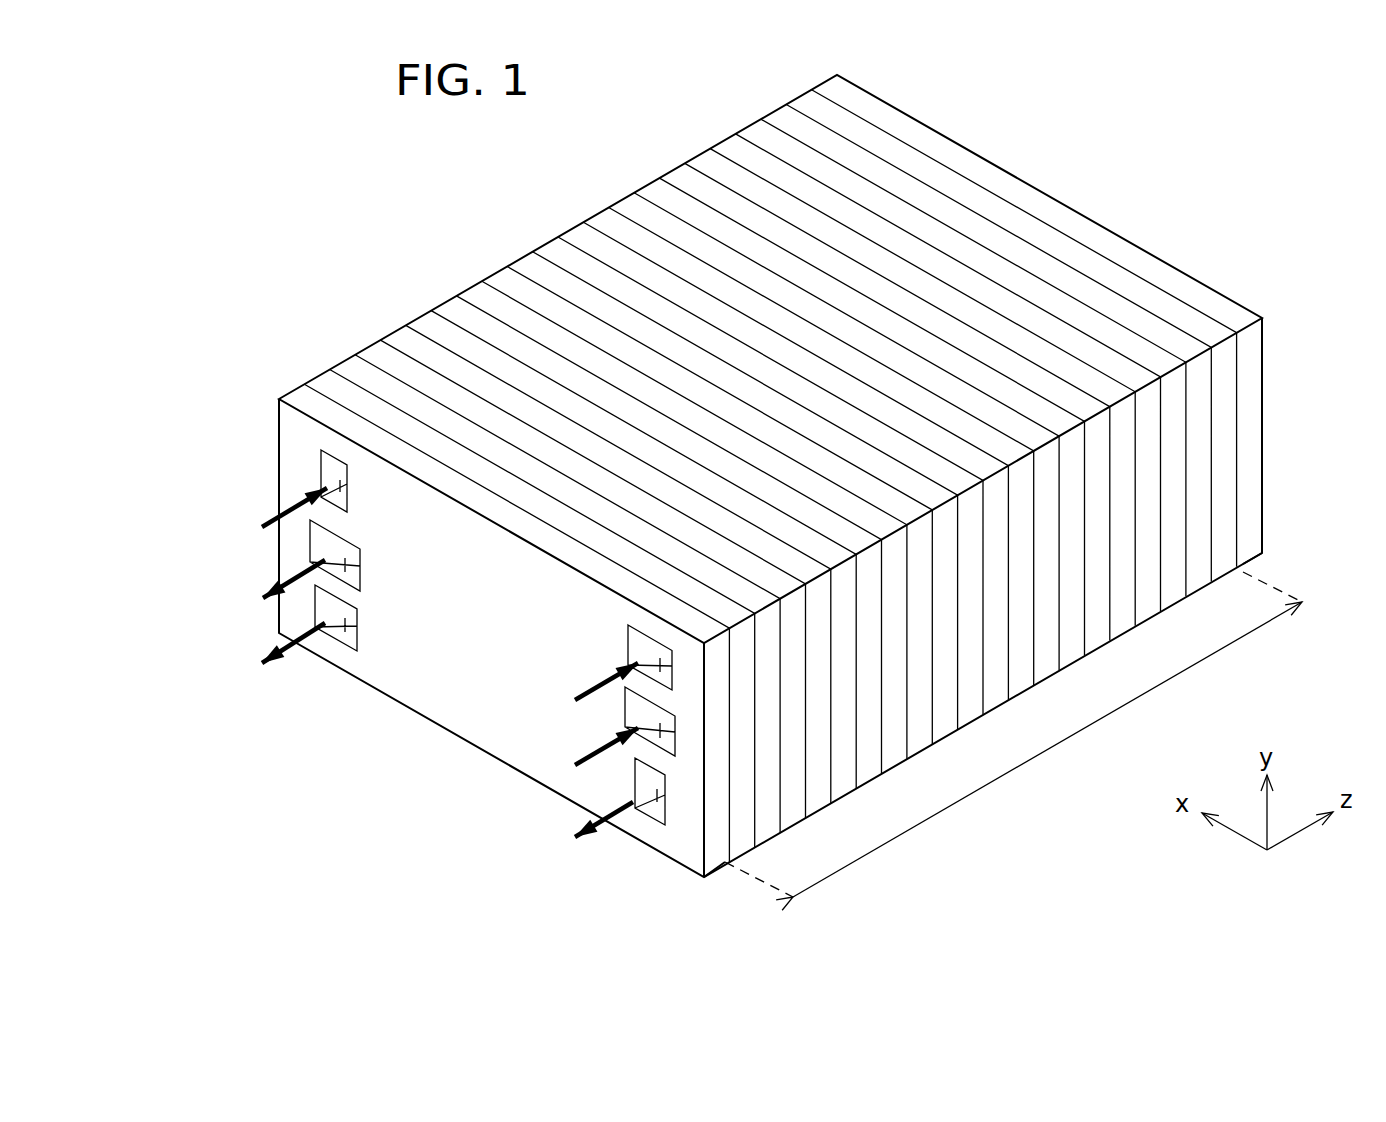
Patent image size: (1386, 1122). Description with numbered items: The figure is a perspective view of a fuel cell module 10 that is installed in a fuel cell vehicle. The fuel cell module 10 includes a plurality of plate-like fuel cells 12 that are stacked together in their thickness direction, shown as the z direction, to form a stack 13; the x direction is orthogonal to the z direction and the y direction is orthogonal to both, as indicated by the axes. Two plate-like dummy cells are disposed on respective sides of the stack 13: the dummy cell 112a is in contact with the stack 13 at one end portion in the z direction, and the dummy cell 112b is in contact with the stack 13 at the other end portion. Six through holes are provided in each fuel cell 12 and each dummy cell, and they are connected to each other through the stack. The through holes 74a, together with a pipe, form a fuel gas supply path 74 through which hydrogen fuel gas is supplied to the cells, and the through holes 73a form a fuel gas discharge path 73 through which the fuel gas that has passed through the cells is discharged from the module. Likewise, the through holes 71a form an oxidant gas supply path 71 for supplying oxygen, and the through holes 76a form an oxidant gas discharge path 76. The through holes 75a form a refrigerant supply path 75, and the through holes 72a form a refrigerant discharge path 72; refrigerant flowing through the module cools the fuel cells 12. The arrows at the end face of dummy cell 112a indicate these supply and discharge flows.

The fuel cell module 10 is at (304, 220).
The fuel cells 12 is at (1037, 205).
The stack 13 is at (1013, 734).
The oxidant gas supply path 71 is at (292, 507).
The through hole 71a is at (320, 467).
The refrigerant discharge path 72 is at (280, 570).
The through hole 72a is at (310, 545).
The fuel gas discharge path 73 is at (313, 633).
The through hole 73a is at (317, 603).
The fuel gas supply path 74 is at (600, 682).
The through hole 74a is at (627, 643).
The refrigerant supply path 75 is at (587, 760).
The through hole 75a is at (617, 705).
The oxidant gas discharge path 76 is at (634, 830).
The through hole 76a is at (645, 818).
The dummy cell 112a is at (725, 862).
The dummy cell 112b is at (1252, 537).